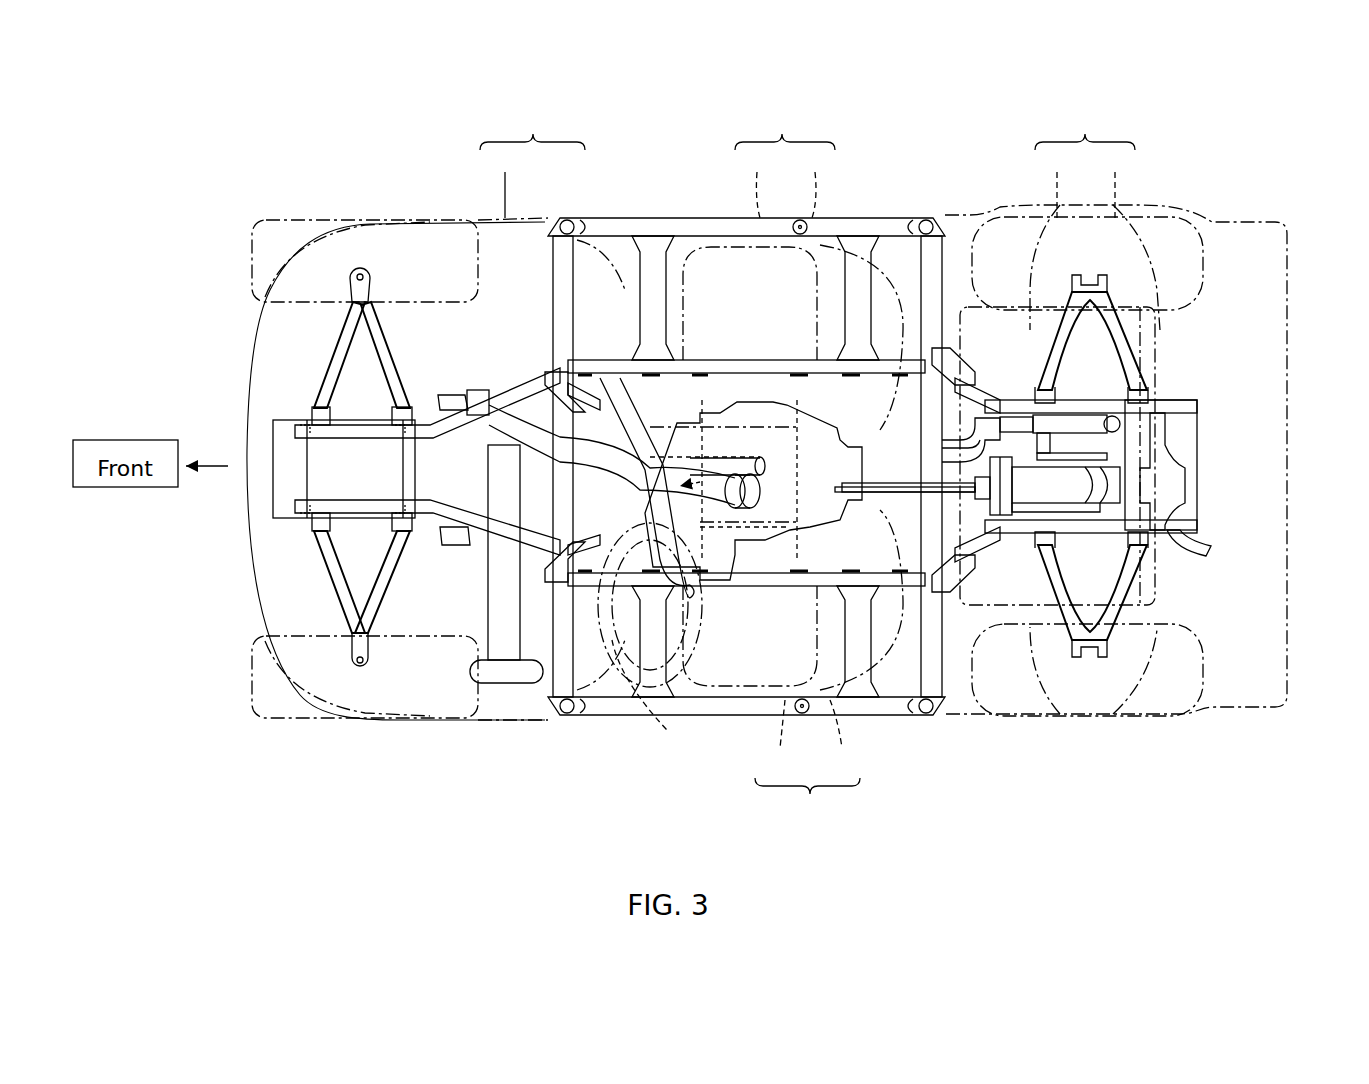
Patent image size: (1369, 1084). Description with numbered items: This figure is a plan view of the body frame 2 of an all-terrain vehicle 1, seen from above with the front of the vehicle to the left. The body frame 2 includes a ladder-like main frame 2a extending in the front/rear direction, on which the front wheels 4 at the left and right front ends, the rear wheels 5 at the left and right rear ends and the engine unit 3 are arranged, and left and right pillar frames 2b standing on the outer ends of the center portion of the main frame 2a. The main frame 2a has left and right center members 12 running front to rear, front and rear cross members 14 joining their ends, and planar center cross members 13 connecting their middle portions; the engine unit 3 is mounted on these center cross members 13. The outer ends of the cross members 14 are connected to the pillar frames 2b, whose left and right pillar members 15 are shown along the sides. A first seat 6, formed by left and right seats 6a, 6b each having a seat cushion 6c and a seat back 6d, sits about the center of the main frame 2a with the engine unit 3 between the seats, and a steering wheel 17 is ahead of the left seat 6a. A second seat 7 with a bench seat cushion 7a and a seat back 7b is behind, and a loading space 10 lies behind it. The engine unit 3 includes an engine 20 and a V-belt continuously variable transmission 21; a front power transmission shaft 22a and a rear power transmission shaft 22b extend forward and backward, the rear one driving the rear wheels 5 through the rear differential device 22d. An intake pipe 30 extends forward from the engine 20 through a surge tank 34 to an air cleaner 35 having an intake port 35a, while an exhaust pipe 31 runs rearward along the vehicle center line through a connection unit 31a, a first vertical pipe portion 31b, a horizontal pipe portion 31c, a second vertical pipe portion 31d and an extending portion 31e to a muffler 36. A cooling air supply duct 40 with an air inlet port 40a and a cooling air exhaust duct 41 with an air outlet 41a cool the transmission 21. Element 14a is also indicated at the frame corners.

The all-terrain vehicle 1 is at (358, 124).
The body frame 2 is at (532, 127).
The main frame 2a is at (504, 183).
The pillar frames 2b is at (612, 230).
The engine unit 3 is at (762, 392).
The front wheels 4 is at (283, 220).
The rear wheels 5 is at (1212, 218).
The first seat 6 is at (722, 218).
The left seat 6a is at (807, 799).
The right seat 6b is at (785, 127).
The seat cushion 6c is at (765, 462).
The seat back 6d is at (826, 462).
The second seat 7 is at (1085, 126).
The bench seat cushion 7a is at (1056, 185).
The seat back 7b is at (1115, 185).
The loading space 10 is at (1290, 490).
The center members 12 is at (735, 356).
The planar center cross members 13 is at (403, 470).
The cross members 14 is at (580, 412).
The frame corner bracket 14a is at (614, 232).
The pillar members 15 is at (874, 218).
The steering wheel 17 is at (625, 702).
The engine 20 is at (800, 400).
The V-belt continuously variable transmission 21 is at (810, 588).
The front power transmission shaft 22a is at (640, 515).
The rear power transmission shaft 22b is at (962, 532).
The rear differential device 22d is at (1100, 533).
The intake pipe 30 is at (685, 432).
The exhaust pipe 31 is at (928, 575).
The connection unit 31a is at (845, 415).
The first vertical pipe portion 31b is at (845, 440).
The horizontal pipe portion 31c is at (886, 480).
The second vertical pipe portion 31d is at (1015, 416).
The extending portion 31e is at (1075, 414).
The surge tank 34 is at (597, 394).
The air cleaner 35 is at (440, 398).
The intake port 35a is at (485, 545).
The muffler 36 is at (1198, 440).
The cooling air supply duct 40 is at (720, 568).
The air inlet port 40a is at (475, 385).
The cooling air exhaust duct 41 is at (695, 472).
The air outlet 41a is at (530, 688).